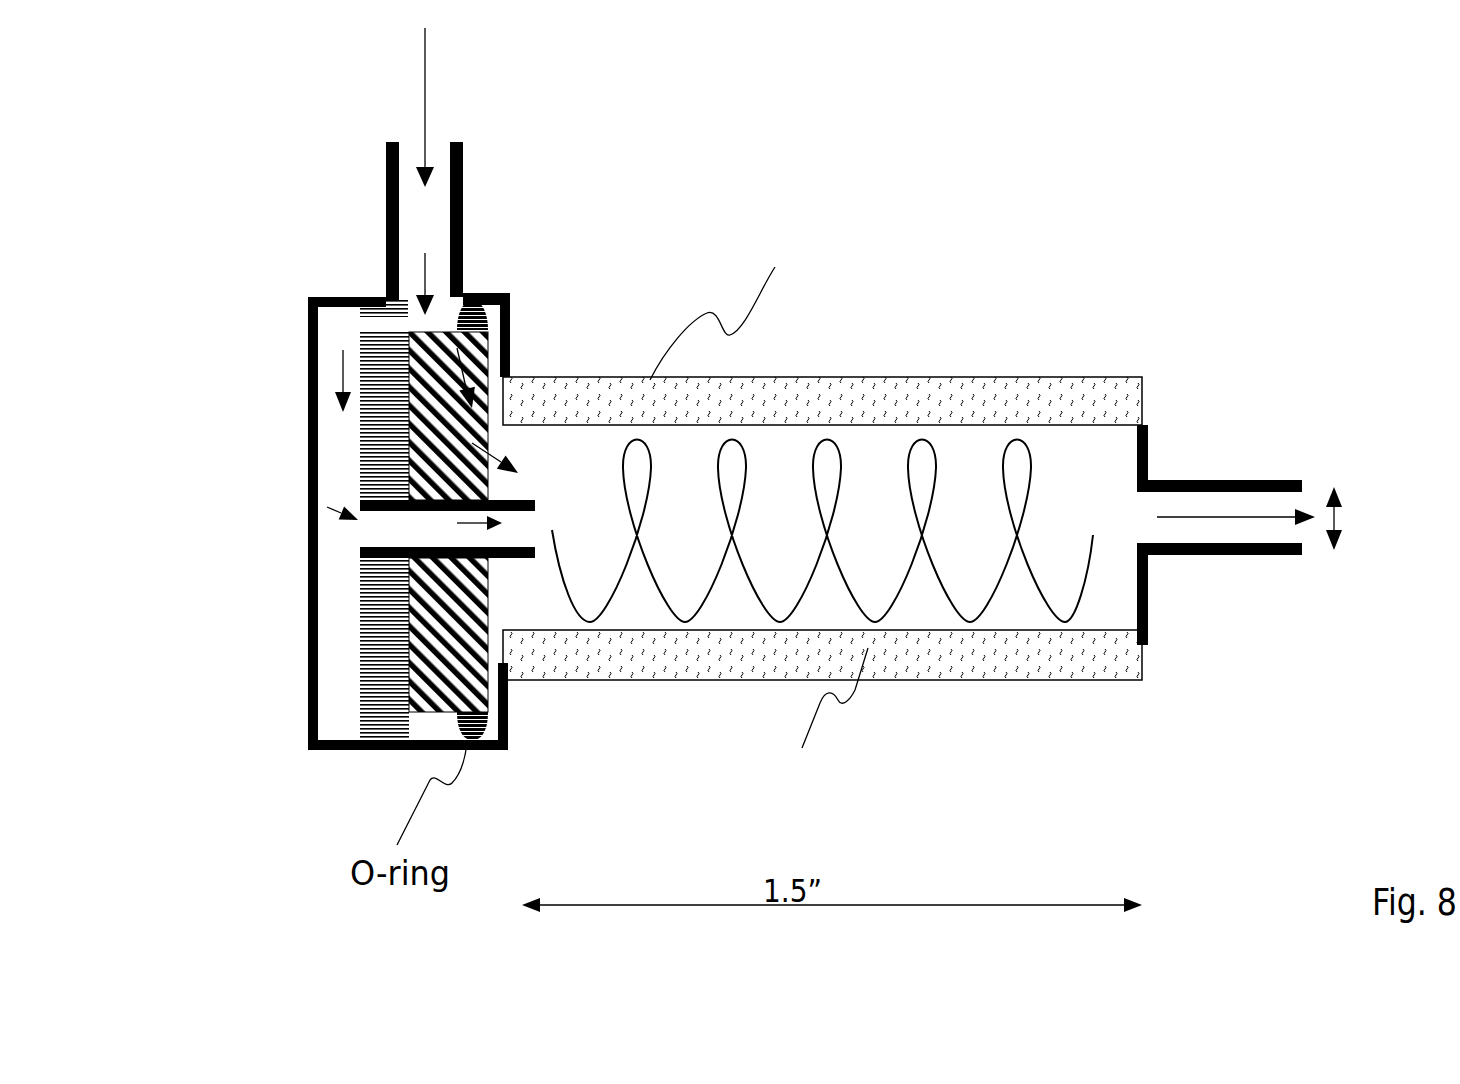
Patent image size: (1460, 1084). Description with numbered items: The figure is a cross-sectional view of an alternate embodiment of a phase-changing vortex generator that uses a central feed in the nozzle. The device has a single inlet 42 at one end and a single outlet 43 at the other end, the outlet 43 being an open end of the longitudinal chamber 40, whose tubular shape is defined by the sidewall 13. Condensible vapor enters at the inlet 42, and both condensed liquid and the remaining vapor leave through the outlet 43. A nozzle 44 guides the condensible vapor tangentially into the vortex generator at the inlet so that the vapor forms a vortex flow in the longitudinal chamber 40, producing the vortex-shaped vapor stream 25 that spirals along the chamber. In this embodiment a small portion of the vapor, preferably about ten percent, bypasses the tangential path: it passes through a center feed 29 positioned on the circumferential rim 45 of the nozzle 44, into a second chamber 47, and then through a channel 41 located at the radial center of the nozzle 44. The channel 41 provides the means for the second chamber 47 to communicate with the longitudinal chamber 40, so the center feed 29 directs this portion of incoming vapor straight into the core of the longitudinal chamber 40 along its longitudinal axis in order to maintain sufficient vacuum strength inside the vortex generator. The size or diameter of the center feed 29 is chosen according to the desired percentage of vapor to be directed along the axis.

The sidewall 13 is at (1010, 650).
The vortex-shaped vapor stream 25 is at (828, 512).
The center feed 29 is at (370, 322).
The longitudinal chamber 40 is at (1113, 590).
The channel 41 is at (393, 522).
The inlet 42 is at (472, 222).
The outlet 43 is at (1188, 472).
The nozzle 44 is at (440, 675).
The circumferential rim 45 is at (388, 720).
The second chamber 47 is at (343, 667).